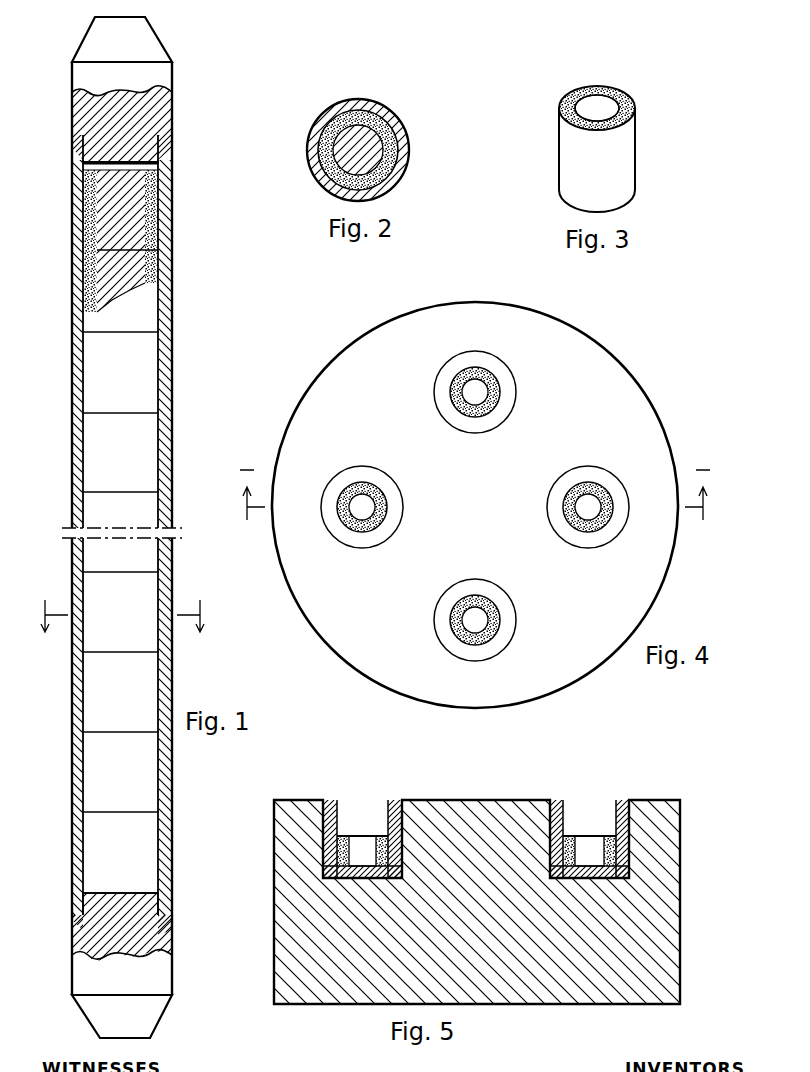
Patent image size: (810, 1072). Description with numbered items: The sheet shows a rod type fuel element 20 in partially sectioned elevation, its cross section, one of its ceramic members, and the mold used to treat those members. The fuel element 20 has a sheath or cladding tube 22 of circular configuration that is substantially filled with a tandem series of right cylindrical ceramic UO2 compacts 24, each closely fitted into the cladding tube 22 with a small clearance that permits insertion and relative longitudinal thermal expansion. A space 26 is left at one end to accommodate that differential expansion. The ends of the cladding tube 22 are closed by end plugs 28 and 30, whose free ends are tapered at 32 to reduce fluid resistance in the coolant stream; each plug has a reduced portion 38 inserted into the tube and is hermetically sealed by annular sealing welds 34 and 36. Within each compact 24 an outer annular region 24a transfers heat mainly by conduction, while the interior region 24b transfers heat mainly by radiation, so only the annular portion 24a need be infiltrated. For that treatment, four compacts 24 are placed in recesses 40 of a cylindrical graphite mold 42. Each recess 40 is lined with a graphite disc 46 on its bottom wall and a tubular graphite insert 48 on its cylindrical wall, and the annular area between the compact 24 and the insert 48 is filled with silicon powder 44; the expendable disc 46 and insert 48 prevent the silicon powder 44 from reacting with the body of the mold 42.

In FIG. 1, the fuel element 20 is at (212, 481).
In FIG. 2, the fuel element 20 is at (442, 188).
In FIG. 1, the cladding tube 22 is at (172, 445).
In FIG. 2, the cladding tube 22 is at (400, 160).
In FIG. 1, the ceramic UO2 compact 24 is at (155, 229).
In FIG. 2, the ceramic UO2 compact 24 is at (392, 128).
In FIG. 3, the ceramic UO2 compact 24 is at (680, 150).
In FIG. 4, the ceramic UO2 compact 24 is at (470, 385).
In FIG. 5, the ceramic UO2 compact 24 is at (362, 840).
In FIG. 1, the annular region of compact 24a is at (150, 183).
In FIG. 2, the annular region of compact 24a is at (380, 130).
In FIG. 3, the annular region of compact 24a is at (620, 92).
In FIG. 1, the interior region of compact 24b is at (143, 211).
In FIG. 2, the interior region of compact 24b is at (345, 142).
In FIG. 3, the interior region of compact 24b is at (612, 108).
In FIG. 1, the space 26 is at (96, 158).
In FIG. 1, the end plug 28 is at (172, 88).
In FIG. 1, the end plug 30 is at (172, 958).
In FIG. 1, the tapered free end 32 is at (150, 42).
In FIG. 1, the annular sealing weld 34 is at (72, 148).
In FIG. 1, the annular sealing weld 36 is at (72, 923).
In FIG. 1, the reduced portion 38 is at (123, 160).
In FIG. 4, the recess 40 is at (382, 476).
In FIG. 5, the recess 40 is at (402, 830).
In FIG. 4, the graphite mold 42 is at (640, 390).
In FIG. 5, the graphite mold 42 is at (668, 895).
In FIG. 4, the silicon powder 44 is at (490, 388).
In FIG. 5, the silicon powder 44 is at (343, 835).
In FIG. 5, the graphite disc 46 is at (335, 872).
In FIG. 4, the tubular graphite insert 48 is at (503, 410).
In FIG. 5, the tubular graphite insert 48 is at (398, 830).